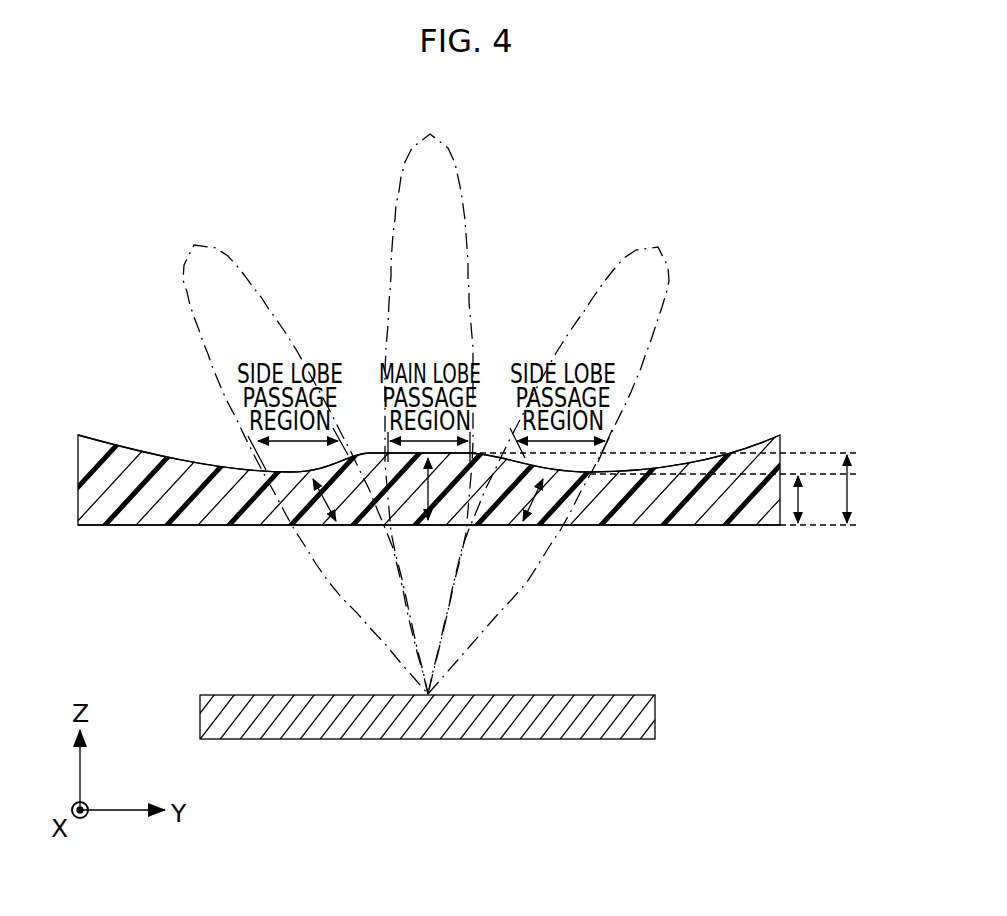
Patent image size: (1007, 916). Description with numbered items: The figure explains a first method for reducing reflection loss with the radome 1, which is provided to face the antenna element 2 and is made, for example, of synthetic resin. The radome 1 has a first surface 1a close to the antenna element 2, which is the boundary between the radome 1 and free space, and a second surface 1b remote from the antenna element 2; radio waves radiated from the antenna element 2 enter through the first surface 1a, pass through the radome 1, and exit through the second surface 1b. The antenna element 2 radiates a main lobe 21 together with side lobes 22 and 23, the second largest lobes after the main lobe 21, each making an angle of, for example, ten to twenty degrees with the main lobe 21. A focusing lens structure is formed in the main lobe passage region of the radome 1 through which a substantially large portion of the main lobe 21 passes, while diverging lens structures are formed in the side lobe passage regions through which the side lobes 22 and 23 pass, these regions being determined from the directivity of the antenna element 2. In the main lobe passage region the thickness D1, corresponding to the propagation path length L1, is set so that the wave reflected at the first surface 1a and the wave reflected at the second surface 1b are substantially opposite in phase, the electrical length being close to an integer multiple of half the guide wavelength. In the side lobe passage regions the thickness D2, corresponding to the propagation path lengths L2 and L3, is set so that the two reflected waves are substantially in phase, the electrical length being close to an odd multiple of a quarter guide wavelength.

The radome 1 is at (128, 512).
The first surface 1a is at (160, 535).
The second surface 1b is at (157, 448).
The antenna element 2 is at (656, 724).
The main lobe 21 is at (452, 150).
The side lobe 22 is at (217, 250).
The side lobe 23 is at (678, 256).
The propagation path length L1 is at (426, 493).
The propagation path length L2 is at (306, 529).
The propagation path length L3 is at (543, 522).
The thickness of the focusing lens structure D1 is at (676, 489).
The thickness of the diverging lens structure D2 is at (723, 498).